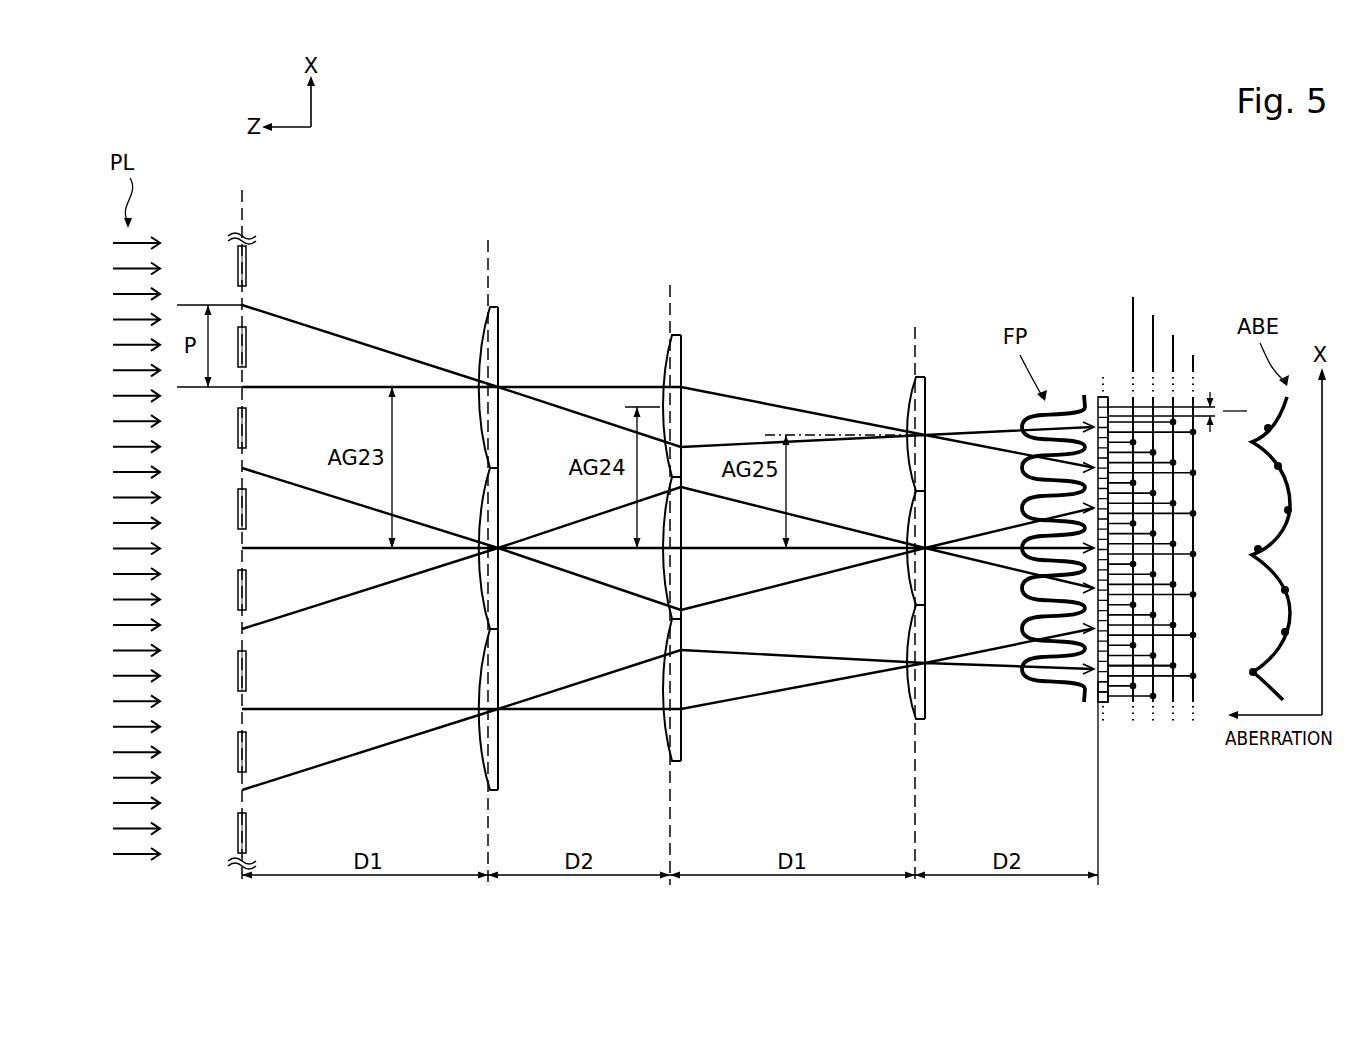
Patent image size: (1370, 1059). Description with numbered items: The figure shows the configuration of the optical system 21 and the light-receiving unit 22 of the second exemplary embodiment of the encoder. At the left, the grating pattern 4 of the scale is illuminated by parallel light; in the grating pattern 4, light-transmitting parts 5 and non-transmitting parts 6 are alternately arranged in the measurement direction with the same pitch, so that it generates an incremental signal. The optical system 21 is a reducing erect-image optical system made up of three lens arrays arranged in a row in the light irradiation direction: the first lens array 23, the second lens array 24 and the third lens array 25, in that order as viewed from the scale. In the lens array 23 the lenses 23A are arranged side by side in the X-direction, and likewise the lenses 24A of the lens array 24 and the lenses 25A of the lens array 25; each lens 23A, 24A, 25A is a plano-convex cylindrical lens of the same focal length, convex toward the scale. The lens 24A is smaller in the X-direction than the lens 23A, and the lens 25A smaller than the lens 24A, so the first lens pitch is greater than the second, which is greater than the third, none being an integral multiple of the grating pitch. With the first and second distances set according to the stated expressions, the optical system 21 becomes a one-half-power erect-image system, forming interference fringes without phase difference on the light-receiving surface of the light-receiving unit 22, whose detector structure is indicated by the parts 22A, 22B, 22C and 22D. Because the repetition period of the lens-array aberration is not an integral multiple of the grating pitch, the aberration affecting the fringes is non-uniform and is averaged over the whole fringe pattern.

The grating pattern 4 is at (227, 220).
The light-transmitting part 5 is at (242, 790).
The non-transmitting part 6 is at (238, 833).
The optical system 21 is at (1157, 212).
The light-receiving unit 22 is at (1125, 523).
The pixel 22A is at (1098, 690).
The pixel 22B is at (1098, 702).
The signal line 22C is at (1112, 665).
The pixel electrode 22D is at (1108, 695).
The first lens array 23 is at (452, 534).
The lens of the first lens array 23A is at (480, 332).
The second lens array 24 is at (621, 546).
The lens of the second lens array 24A is at (667, 362).
The third lens array 25 is at (863, 557).
The lens of the third lens array 25A is at (910, 398).